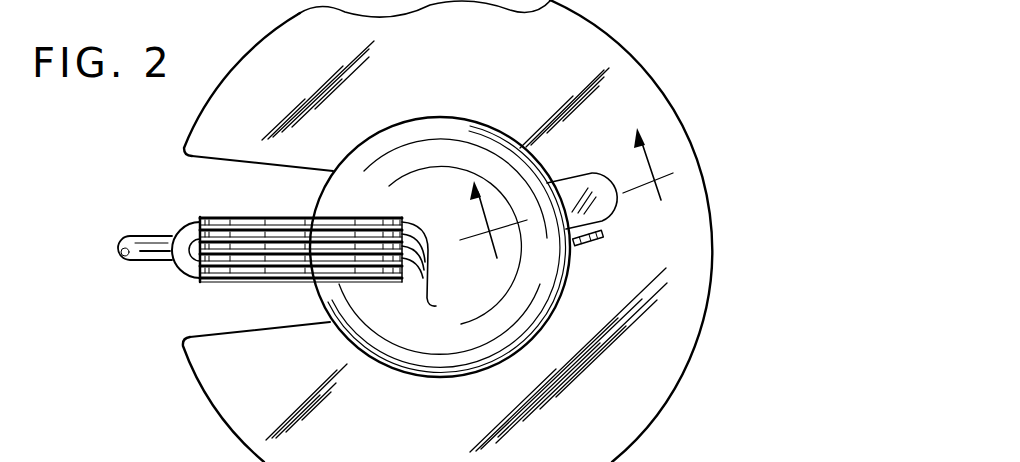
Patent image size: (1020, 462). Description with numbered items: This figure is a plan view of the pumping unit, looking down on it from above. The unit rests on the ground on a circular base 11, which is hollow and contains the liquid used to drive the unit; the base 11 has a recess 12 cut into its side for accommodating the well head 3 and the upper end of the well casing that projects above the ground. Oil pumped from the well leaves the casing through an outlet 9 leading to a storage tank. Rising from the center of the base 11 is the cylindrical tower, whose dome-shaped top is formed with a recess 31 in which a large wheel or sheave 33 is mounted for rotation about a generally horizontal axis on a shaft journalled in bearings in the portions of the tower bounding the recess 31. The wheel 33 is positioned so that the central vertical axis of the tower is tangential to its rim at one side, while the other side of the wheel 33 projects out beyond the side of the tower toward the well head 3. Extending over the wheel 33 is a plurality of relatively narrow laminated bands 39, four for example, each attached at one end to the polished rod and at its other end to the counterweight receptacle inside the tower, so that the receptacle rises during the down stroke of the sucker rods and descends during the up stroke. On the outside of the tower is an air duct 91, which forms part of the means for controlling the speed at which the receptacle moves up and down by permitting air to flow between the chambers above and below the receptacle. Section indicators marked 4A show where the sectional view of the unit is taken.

The circular base 11 is at (713, 228).
The recess 12 is at (220, 163).
The recess 31 is at (368, 214).
The wheel or sheave 33 is at (258, 281).
The well head 3 is at (180, 268).
The outlet 9 is at (143, 232).
The cables or laminated bands 39 is at (432, 277).
The air duct 91 is at (598, 233).
The section line 4A is at (570, 205).